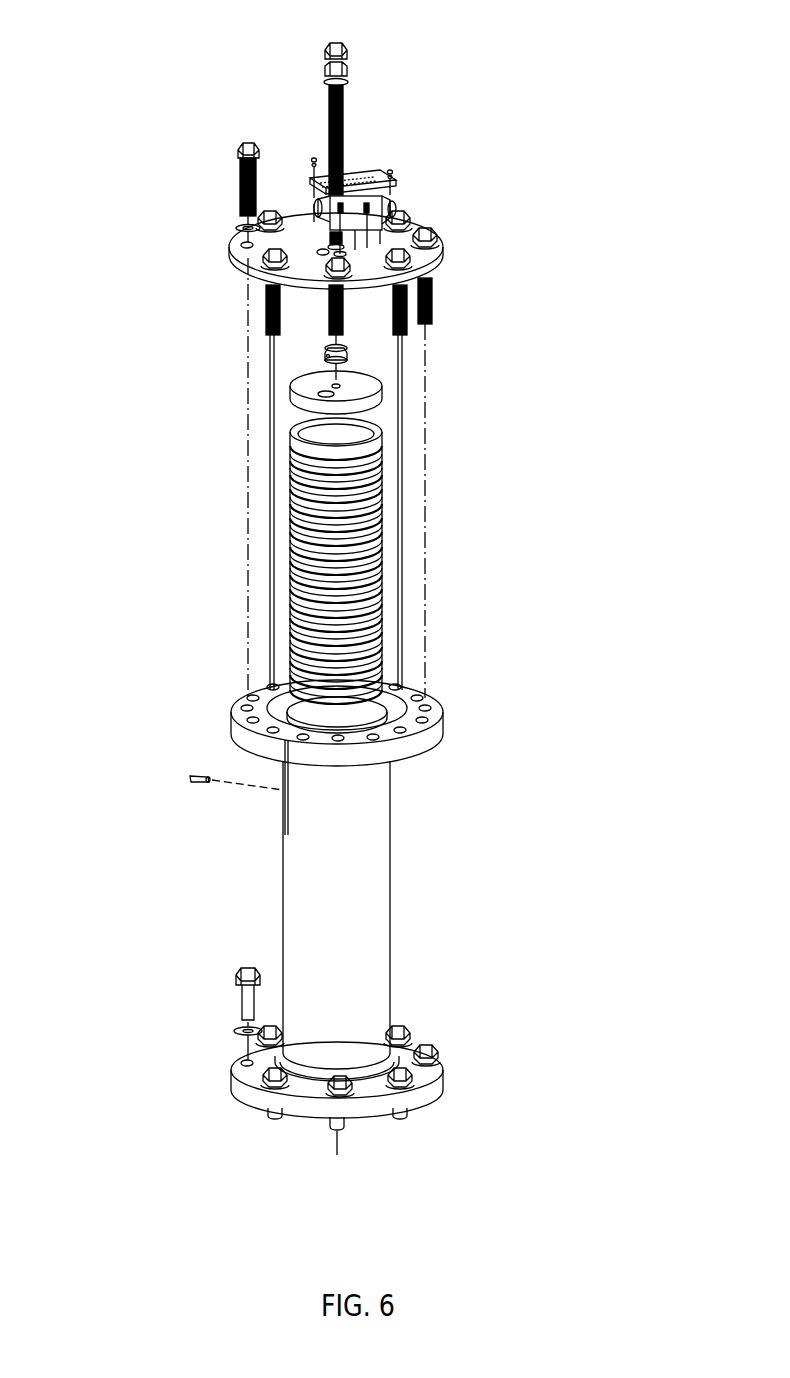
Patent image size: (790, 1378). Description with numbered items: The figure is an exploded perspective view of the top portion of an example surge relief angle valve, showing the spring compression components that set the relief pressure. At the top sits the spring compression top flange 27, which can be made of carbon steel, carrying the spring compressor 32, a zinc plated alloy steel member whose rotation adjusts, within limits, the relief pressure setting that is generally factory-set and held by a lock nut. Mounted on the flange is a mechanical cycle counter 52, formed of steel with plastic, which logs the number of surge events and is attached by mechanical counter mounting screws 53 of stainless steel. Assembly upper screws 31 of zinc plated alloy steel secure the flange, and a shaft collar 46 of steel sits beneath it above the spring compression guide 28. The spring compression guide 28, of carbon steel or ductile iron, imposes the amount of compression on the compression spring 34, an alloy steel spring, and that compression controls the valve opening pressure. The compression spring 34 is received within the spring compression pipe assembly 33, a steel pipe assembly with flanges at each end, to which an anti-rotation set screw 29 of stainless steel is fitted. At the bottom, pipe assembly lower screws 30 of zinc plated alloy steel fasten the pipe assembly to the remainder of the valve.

The spring compression top flange 27 is at (248, 258).
The spring compression guide 28 is at (305, 405).
The anti-rotation set screw 29 is at (190, 778).
The pipe assembly lower screws 30 is at (237, 977).
The assembly upper screws 31 is at (432, 293).
The spring compressor 32 is at (344, 128).
The spring compression pipe assembly 33 is at (373, 897).
The compression spring 34 is at (367, 530).
The shaft collar 46 is at (352, 358).
The mechanical cycle counter 52 is at (378, 197).
The mechanical counter mounting screws 53 is at (314, 156).